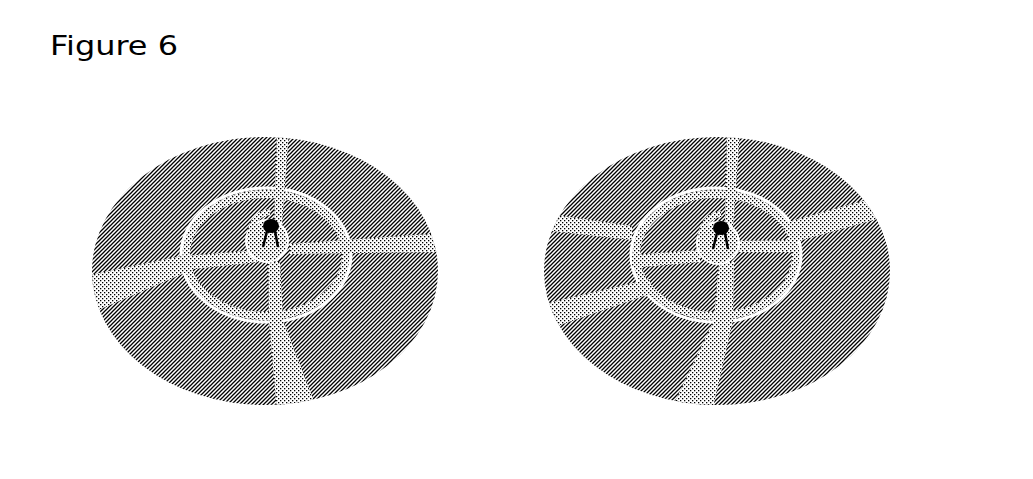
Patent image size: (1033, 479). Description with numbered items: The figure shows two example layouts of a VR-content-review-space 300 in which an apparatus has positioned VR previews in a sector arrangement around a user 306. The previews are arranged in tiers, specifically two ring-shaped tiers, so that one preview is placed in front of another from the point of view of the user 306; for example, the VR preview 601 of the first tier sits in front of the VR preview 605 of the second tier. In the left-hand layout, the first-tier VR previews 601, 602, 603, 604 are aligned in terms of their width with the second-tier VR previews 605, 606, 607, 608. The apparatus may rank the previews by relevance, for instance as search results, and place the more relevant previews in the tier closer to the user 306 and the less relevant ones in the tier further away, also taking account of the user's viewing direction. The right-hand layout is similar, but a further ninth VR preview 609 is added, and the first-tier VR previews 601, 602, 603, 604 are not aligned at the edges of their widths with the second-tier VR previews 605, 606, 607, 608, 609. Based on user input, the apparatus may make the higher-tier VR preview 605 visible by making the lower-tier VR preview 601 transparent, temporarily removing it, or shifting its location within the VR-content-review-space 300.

The VR-content-review-space 300 is at (405, 93).
The user 306 is at (273, 215).
The VR preview 601 is at (218, 282).
The VR preview 602 is at (310, 272).
The VR preview 603 is at (295, 217).
The VR preview 604 is at (225, 217).
The VR preview 605 is at (197, 365).
The VR preview 606 is at (380, 293).
The VR preview 607 is at (328, 170).
The VR preview 608 is at (132, 215).
The VR preview 609 is at (572, 253).